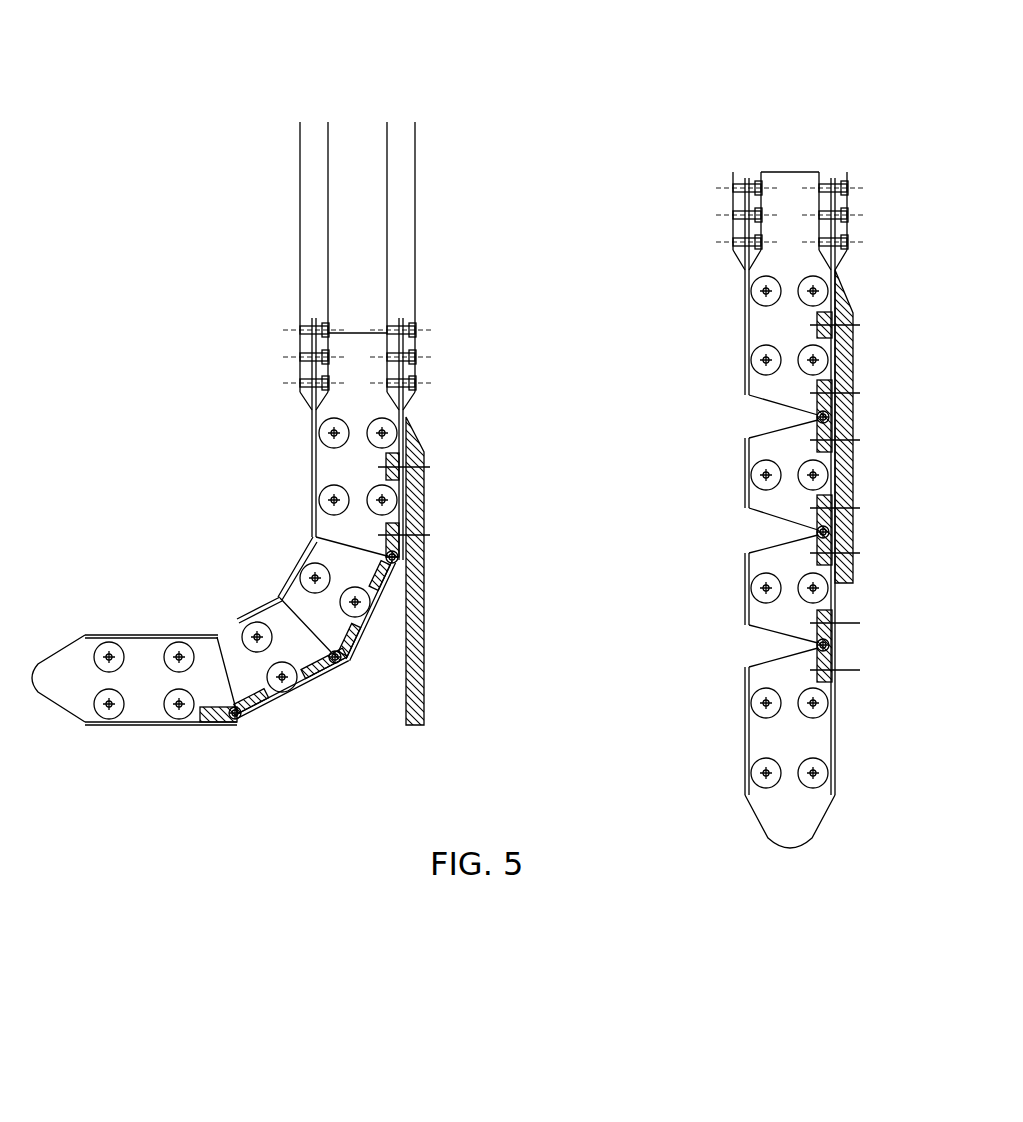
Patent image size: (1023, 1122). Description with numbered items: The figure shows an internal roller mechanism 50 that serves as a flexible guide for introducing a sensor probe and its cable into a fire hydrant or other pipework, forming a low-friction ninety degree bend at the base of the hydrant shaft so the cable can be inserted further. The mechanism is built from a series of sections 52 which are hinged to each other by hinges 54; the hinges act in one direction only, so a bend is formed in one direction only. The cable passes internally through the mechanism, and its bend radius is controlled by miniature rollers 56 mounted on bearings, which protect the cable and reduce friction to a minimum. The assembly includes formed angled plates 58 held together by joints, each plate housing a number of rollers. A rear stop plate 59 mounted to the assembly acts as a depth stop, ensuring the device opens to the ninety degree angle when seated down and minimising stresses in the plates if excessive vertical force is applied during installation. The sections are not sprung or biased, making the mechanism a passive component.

The internal roller mechanism 50 is at (210, 428).
The sections 52 is at (370, 652).
The hinges 54 is at (842, 620).
The miniature rollers 56 is at (758, 472).
The formed angled plates 58 is at (757, 670).
The rear stop plate 59 is at (423, 510).